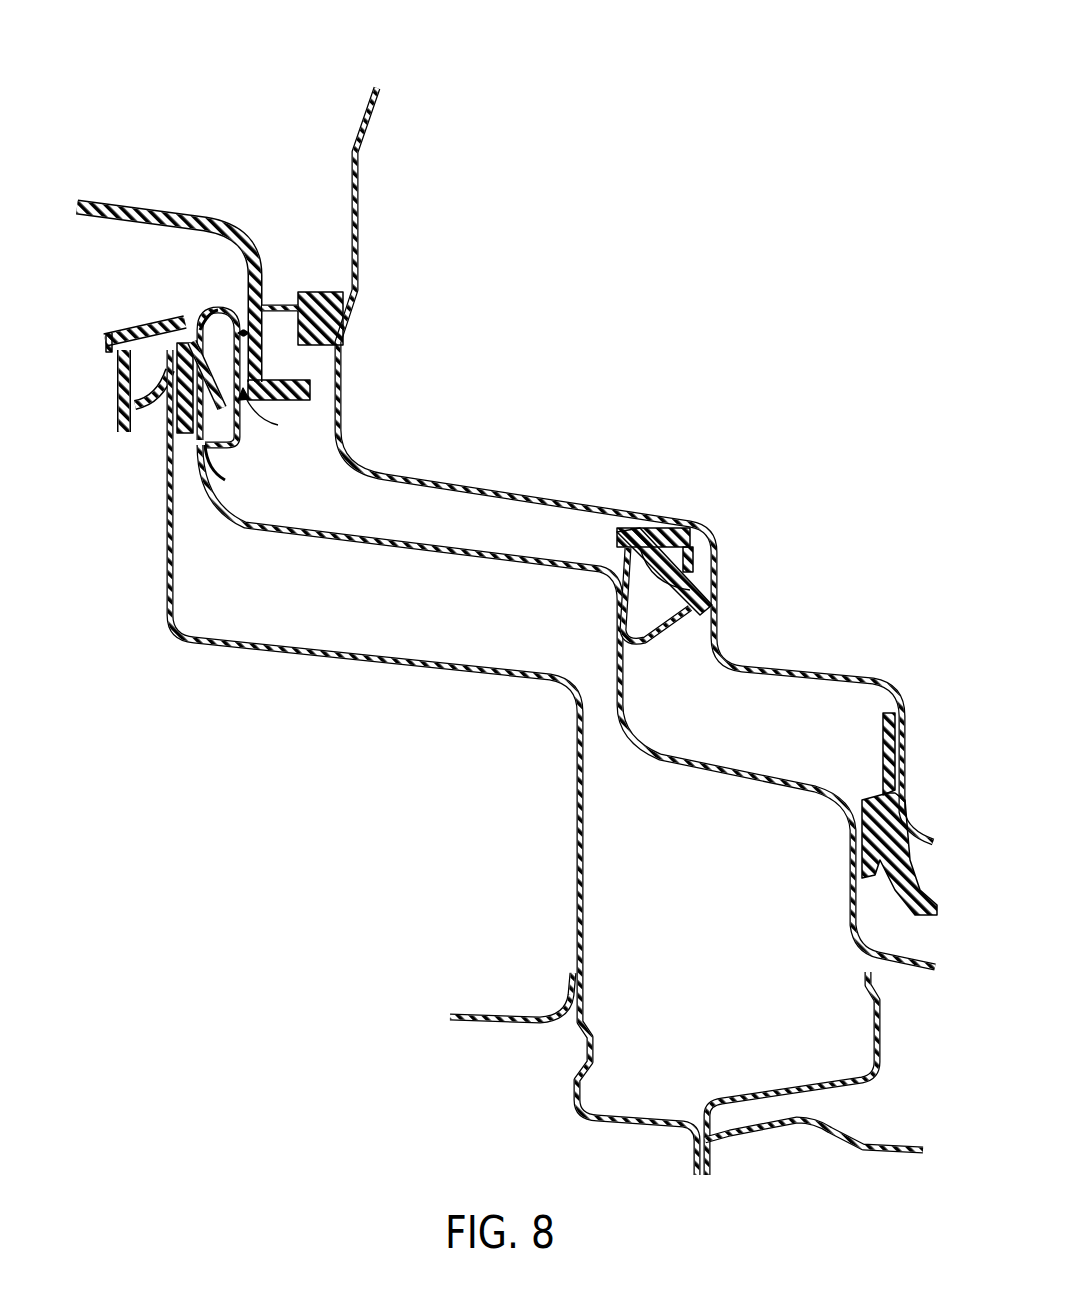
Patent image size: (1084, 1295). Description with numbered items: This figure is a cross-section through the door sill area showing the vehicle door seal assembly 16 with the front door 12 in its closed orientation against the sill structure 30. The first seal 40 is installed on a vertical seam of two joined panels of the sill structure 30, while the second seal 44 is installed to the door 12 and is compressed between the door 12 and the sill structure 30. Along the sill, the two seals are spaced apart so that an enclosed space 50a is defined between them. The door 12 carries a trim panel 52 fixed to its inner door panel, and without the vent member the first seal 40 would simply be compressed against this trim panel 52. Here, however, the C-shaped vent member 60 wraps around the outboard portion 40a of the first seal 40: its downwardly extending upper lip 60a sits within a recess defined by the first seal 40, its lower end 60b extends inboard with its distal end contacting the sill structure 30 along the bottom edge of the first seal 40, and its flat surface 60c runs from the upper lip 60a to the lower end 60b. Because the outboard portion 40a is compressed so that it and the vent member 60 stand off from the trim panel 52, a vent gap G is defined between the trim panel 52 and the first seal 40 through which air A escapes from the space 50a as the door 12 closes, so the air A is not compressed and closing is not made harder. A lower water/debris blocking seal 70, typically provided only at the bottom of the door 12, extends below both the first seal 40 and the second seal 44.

The vehicle door seal assembly 16 is at (247, 58).
The front door 12 is at (368, 132).
The trim panel 52 is at (148, 208).
The outboard portion 40a is at (172, 368).
The first seal 40 is at (200, 447).
The vent member 60 is at (236, 412).
The upper lip 60a is at (172, 322).
The lower end 60b is at (231, 455).
The flat surface 60c is at (240, 412).
The vent gap G is at (241, 325).
The air A is at (270, 425).
The enclosed space 50a is at (426, 517).
The sill structure 30 is at (462, 555).
The second seal 44 is at (613, 548).
The lower water/debris blocking seal 70 is at (897, 897).